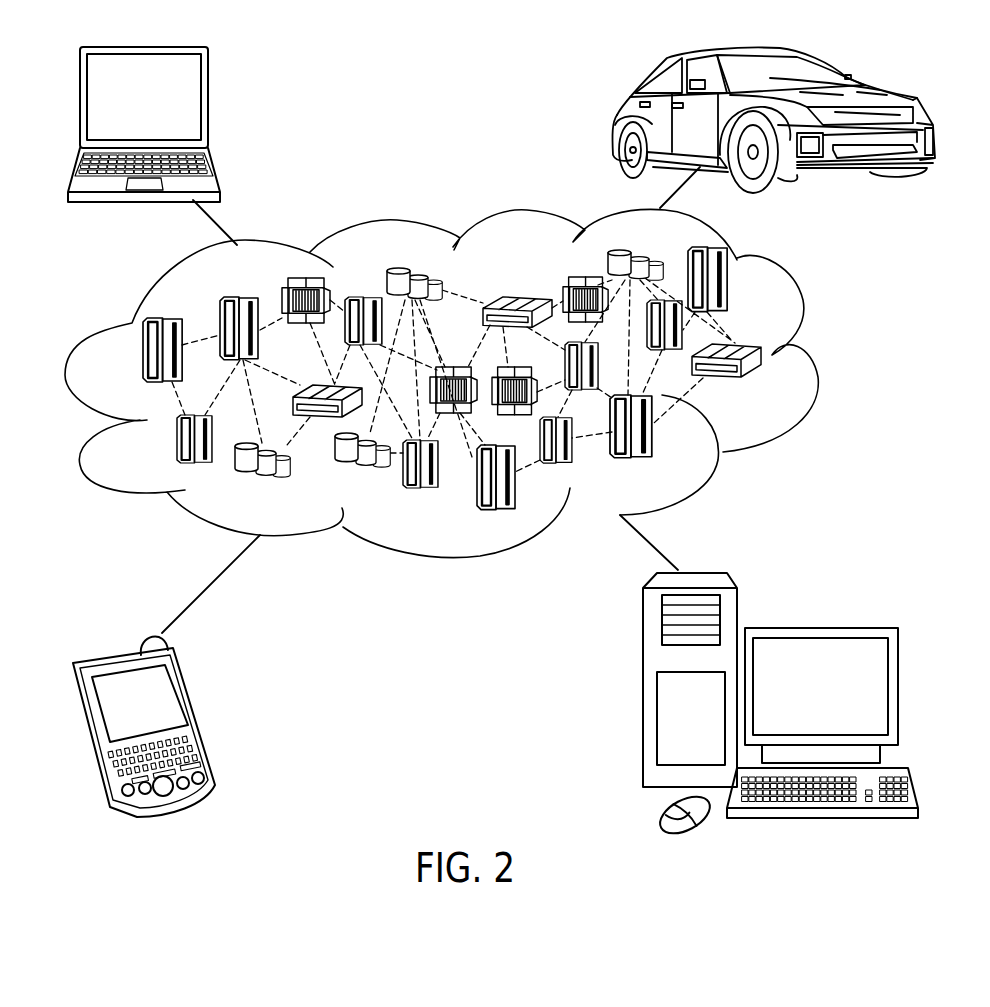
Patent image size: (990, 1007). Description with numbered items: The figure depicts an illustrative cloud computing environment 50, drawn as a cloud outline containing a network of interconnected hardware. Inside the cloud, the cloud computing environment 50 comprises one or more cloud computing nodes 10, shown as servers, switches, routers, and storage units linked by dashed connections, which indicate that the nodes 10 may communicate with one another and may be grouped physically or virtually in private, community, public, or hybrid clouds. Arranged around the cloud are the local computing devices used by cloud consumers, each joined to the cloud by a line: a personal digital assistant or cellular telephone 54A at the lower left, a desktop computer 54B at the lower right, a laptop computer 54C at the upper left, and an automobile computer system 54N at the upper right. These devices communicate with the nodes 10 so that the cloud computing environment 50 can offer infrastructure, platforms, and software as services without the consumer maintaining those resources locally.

The cloud computing node 10 is at (767, 387).
The cloud computing environment 50 is at (818, 362).
The personal digital assistant or cellular telephone 54A is at (198, 712).
The desktop computer 54B is at (819, 627).
The laptop computer 54C is at (208, 104).
The automobile computer system 54N is at (615, 120).